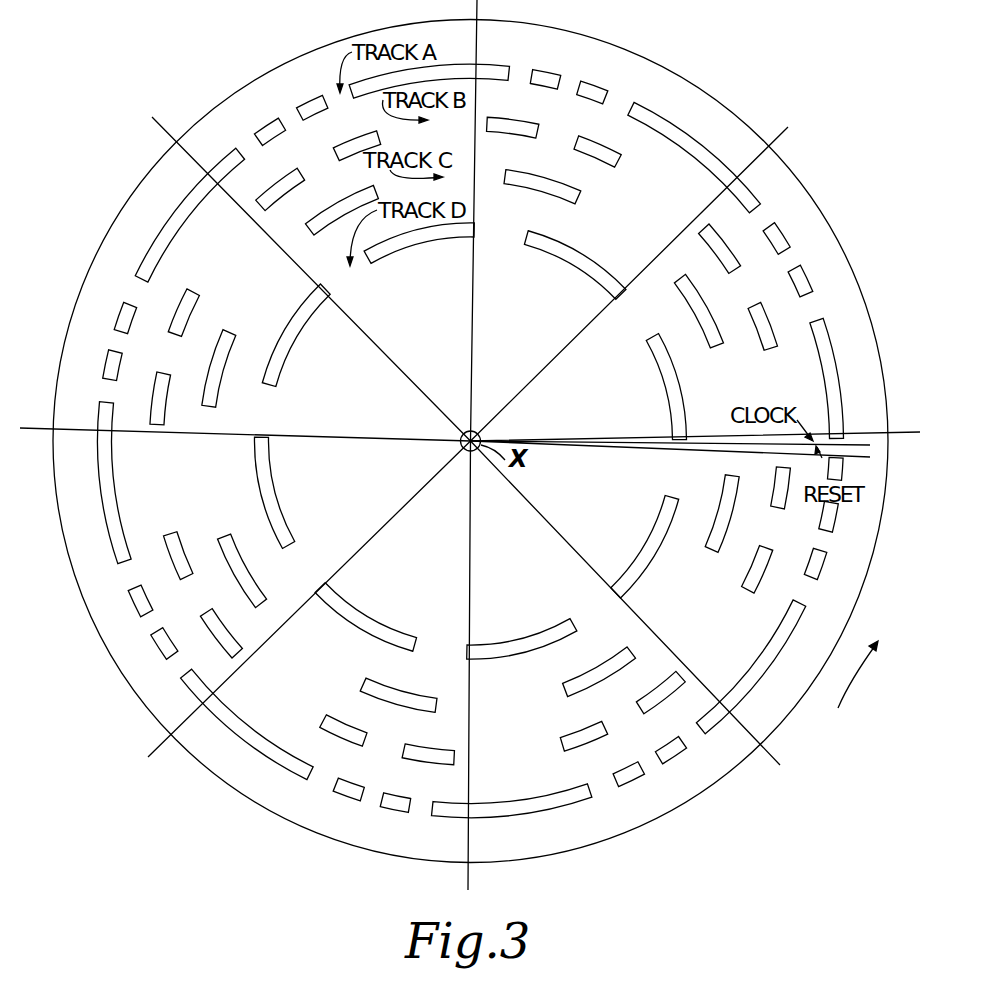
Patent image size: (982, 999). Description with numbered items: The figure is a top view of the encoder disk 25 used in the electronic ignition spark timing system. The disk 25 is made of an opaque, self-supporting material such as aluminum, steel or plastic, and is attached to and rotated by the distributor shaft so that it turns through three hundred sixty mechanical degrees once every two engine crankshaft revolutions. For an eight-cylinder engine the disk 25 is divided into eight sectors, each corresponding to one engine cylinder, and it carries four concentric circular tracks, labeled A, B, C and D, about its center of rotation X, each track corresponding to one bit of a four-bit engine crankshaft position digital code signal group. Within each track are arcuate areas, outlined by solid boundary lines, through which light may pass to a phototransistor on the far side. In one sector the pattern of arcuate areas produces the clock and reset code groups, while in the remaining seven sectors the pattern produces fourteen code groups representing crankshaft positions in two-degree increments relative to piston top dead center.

The disk 25 is at (263, 88).